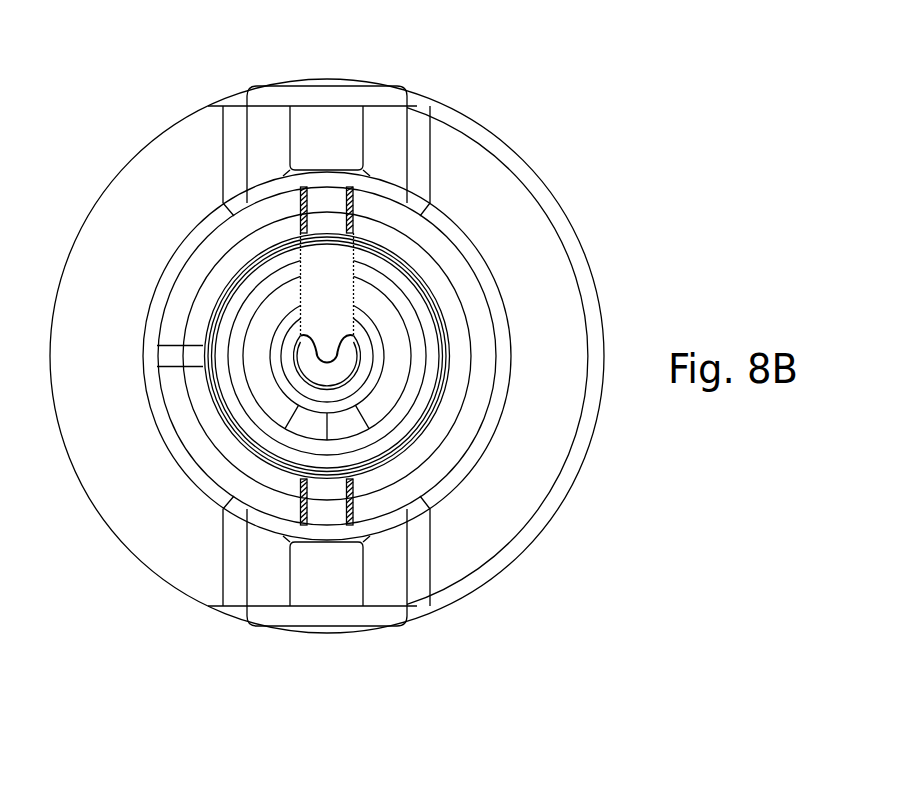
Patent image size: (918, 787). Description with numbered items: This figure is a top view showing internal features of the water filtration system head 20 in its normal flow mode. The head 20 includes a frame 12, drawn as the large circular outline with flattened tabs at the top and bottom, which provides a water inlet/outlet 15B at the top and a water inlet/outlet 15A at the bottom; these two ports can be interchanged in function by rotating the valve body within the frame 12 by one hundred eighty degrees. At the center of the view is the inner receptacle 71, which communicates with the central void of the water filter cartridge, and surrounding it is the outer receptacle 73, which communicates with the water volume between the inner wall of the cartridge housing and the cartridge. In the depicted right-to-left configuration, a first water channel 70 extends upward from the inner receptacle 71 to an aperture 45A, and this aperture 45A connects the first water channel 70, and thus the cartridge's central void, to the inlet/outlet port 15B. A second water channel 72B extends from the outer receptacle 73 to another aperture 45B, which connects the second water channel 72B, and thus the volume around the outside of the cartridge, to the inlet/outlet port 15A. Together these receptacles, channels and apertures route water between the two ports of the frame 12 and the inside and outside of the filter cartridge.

The frame 12 is at (563, 203).
The water filtration system head 20 is at (613, 112).
The water inlet/outlet 15A is at (328, 637).
The water inlet/outlet 15B is at (327, 76).
The aperture 45A is at (330, 237).
The aperture 45B is at (318, 474).
The first water channel 70 is at (332, 316).
The inner receptacle 71 is at (362, 358).
The second water channel 72B is at (348, 421).
The outer receptacle 73 is at (240, 392).